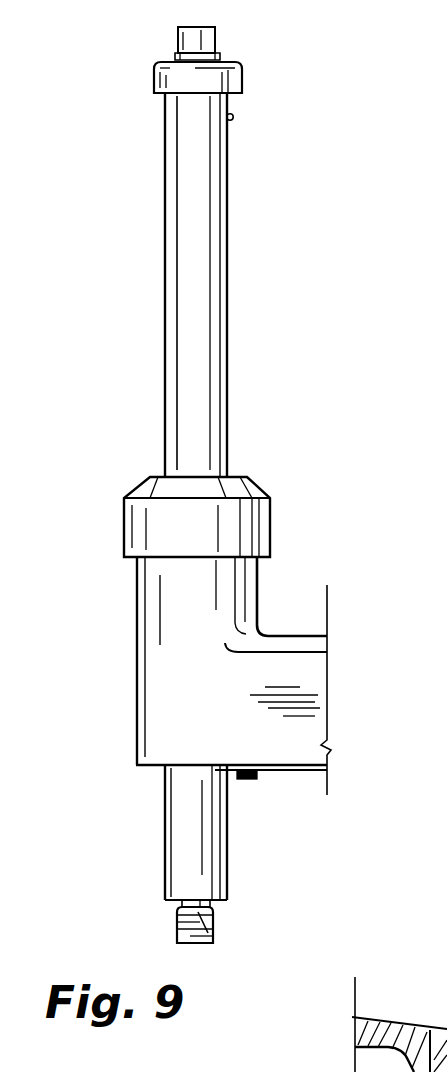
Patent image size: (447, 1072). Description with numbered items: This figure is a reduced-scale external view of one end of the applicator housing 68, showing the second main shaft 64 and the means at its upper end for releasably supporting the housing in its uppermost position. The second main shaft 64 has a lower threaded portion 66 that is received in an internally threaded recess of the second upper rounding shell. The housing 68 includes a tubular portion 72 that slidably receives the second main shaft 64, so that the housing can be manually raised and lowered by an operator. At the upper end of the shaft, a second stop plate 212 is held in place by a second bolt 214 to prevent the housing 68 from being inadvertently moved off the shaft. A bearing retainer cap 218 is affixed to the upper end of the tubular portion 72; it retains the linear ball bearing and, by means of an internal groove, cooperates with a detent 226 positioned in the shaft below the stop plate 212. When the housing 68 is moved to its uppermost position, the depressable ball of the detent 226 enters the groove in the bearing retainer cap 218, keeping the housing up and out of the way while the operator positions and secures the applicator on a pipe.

The second bolt 214 is at (200, 43).
The second stop plate 212 is at (223, 81).
The detent 226 is at (233, 119).
The second main shaft 64 is at (204, 334).
The bearing retainer cap 218 is at (248, 510).
The tubular portion 72 is at (240, 597).
The applicator housing 68 is at (285, 662).
The lower threaded portion 66 is at (215, 923).